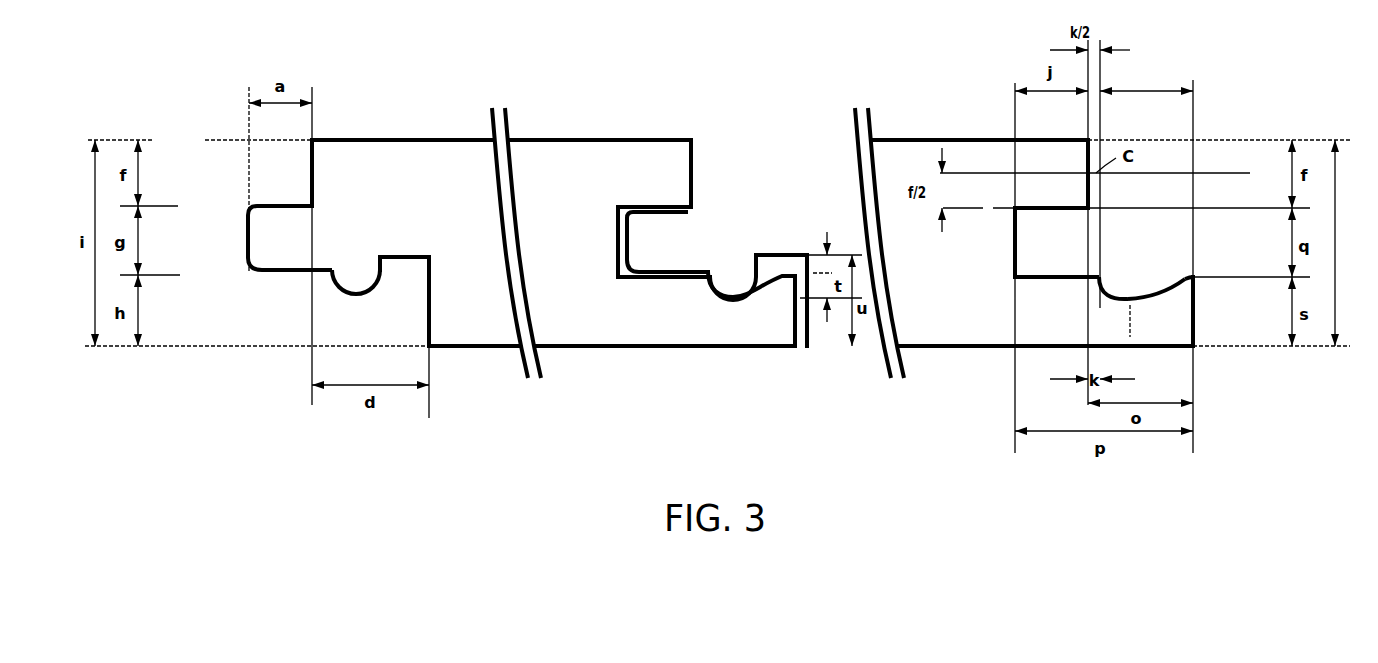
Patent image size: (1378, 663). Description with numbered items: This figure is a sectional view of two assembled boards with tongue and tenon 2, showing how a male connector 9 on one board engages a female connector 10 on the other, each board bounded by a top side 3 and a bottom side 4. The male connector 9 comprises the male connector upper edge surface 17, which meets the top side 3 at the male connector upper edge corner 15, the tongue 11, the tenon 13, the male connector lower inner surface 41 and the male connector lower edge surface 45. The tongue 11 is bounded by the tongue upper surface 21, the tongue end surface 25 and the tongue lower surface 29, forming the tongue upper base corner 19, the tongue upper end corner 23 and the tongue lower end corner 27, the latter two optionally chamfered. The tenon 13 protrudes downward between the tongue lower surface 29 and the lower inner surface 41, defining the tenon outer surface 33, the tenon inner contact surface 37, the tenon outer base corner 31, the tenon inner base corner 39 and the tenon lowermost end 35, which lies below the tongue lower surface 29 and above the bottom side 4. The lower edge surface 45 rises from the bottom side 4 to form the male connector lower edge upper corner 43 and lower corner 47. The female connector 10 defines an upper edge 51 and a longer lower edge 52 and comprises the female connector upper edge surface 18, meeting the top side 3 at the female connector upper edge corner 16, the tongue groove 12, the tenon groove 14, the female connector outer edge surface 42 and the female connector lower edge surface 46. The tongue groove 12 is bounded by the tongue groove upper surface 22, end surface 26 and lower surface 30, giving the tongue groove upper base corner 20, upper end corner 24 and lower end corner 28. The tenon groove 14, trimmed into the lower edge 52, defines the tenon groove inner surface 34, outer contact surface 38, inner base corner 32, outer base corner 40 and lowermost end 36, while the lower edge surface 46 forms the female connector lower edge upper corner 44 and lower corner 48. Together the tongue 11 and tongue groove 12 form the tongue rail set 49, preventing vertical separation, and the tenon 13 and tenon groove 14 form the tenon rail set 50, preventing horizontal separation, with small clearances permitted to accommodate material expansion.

The board with tongue and tenon 2 is at (520, 220).
The top side 3 is at (430, 140).
The bottom side 4 is at (462, 347).
The male connector 9 is at (733, 152).
The female connector 10 is at (583, 152).
The tongue 11 is at (264, 262).
The tongue groove 12 is at (1027, 265).
The tenon 13 is at (352, 278).
The tenon groove 14 is at (1136, 318).
The male connector upper edge corner 15 is at (315, 140).
The female connector upper edge corner 16 is at (1093, 140).
The male connector upper edge surface 17 is at (315, 180).
The female connector upper edge surface 18 is at (1092, 196).
The tongue upper base corner 19 is at (315, 206).
The tongue groove upper base corner 20 is at (1093, 208).
The tongue upper surface 21 is at (270, 206).
The tongue groove upper surface 22 is at (1072, 211).
The tongue upper end corner 23 is at (250, 210).
The tongue groove upper end corner 24 is at (1018, 211).
The tongue end surface 25 is at (248, 235).
The tongue groove end surface 26 is at (1013, 243).
The tongue lower end corner 27 is at (255, 262).
The tongue groove lower end corner 28 is at (1016, 277).
The tongue lower surface 29 is at (278, 272).
The tongue groove lower surface 30 is at (1055, 285).
The tenon outer base corner 31 is at (334, 264).
The tenon groove inner base corner 32 is at (1101, 276).
The tenon outer surface 33 is at (330, 280).
The tenon groove inner surface 34 is at (1118, 286).
The tenon lowermost end 35 is at (354, 296).
The tenon groove lowermost end 36 is at (1152, 290).
The tenon inner contact surface 37 is at (373, 291).
The tenon groove outer contact surface 38 is at (1162, 287).
The tenon inner base corner 39 is at (385, 262).
The tenon groove outer base corner 40 is at (1180, 276).
The male connector lower inner surface 41 is at (400, 257).
The female connector outer edge surface 42 is at (1190, 275).
The male connector lower edge upper corner 43 is at (428, 257).
The female connector lower edge upper corner 44 is at (1195, 283).
The male connector lower edge surface 45 is at (431, 305).
The female connector lower edge surface 46 is at (1195, 308).
The male connector lower edge lower corner 47 is at (429, 347).
The female connector lower edge lower corner 48 is at (1195, 347).
The tongue rail set 49 is at (627, 268).
The tenon rail set 50 is at (800, 283).
The upper edge 51 is at (1053, 182).
The lower edge 52 is at (1110, 325).